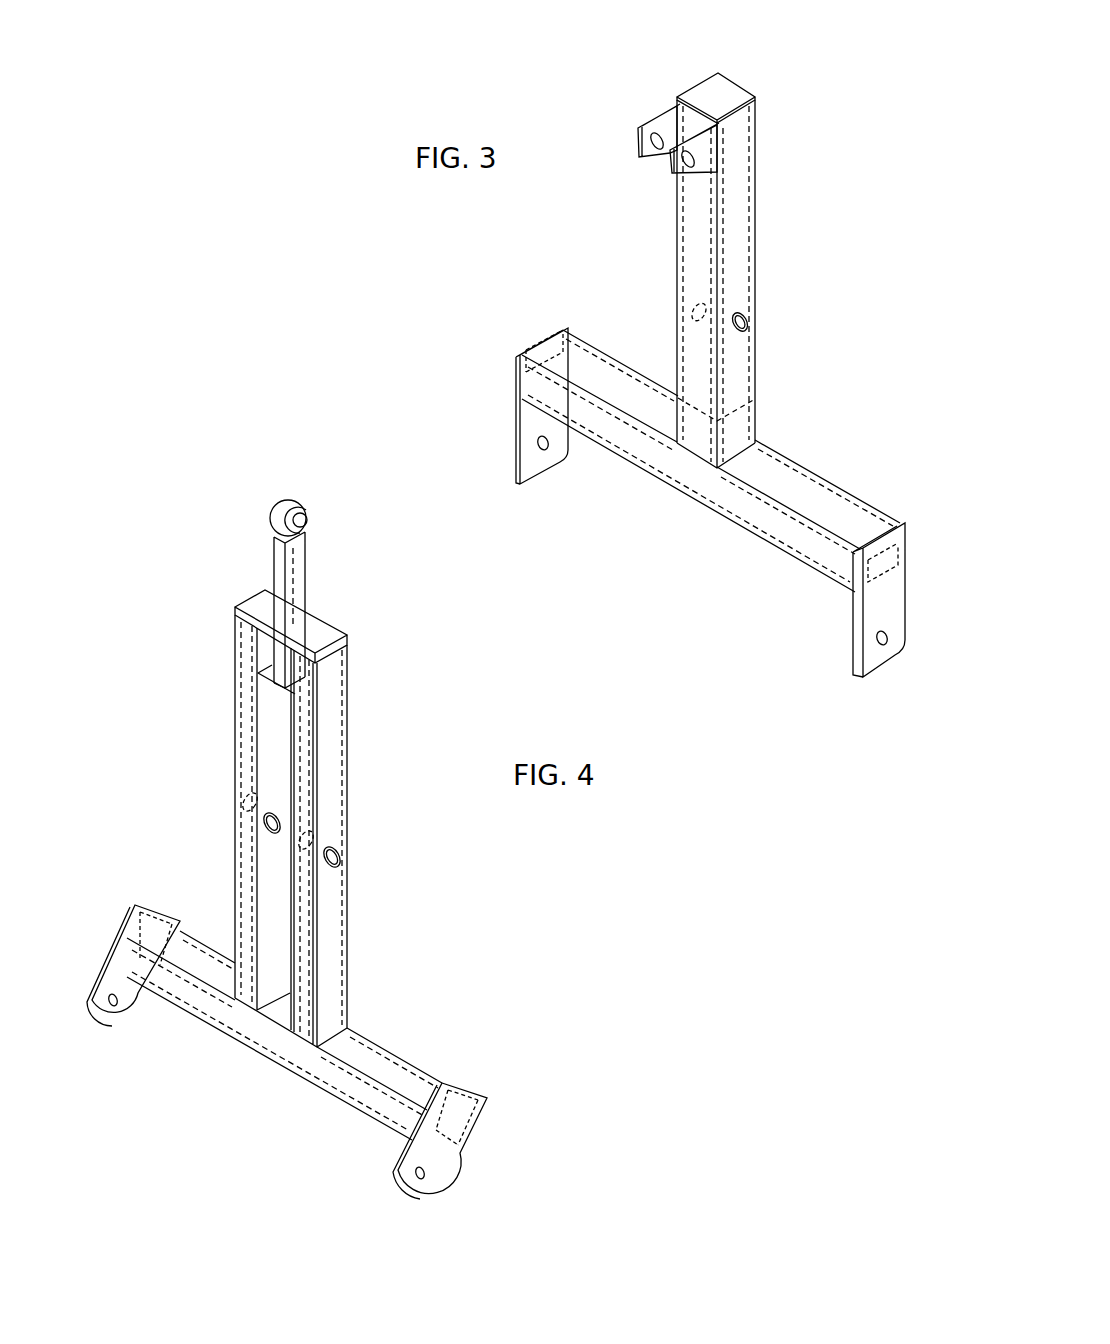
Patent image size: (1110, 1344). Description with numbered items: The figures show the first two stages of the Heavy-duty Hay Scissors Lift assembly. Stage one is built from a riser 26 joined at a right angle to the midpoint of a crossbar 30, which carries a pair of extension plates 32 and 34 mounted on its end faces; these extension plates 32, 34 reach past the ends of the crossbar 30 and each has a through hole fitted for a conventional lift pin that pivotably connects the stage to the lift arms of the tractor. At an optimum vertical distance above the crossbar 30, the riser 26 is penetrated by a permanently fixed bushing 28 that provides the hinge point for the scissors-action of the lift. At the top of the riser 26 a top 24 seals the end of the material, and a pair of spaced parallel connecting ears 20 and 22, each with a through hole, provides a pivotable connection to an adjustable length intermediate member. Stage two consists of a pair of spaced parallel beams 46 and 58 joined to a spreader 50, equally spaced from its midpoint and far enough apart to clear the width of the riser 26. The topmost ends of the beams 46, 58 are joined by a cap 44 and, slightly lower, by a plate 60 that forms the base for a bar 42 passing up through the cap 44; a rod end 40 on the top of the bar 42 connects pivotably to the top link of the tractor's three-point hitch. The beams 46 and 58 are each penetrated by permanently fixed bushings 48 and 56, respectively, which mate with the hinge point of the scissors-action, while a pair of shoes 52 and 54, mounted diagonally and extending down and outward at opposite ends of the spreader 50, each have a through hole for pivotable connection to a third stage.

In FIG. 3, the connecting ear 20 is at (670, 167).
In FIG. 3, the connecting ear 22 is at (638, 152).
In FIG. 3, the top 24 is at (722, 90).
In FIG. 3, the riser 26 is at (732, 147).
In FIG. 3, the bushing 28 is at (746, 318).
In FIG. 3, the crossbar 30 is at (770, 475).
In FIG. 3, the extension plate 32 is at (855, 630).
In FIG. 3, the extension plate 34 is at (522, 352).
In FIG. 4, the rod end 40 is at (295, 496).
In FIG. 4, the bar 42 is at (298, 570).
In FIG. 4, the cap 44 is at (317, 635).
In FIG. 4, the beam 46 is at (335, 718).
In FIG. 4, the bushing 48 is at (343, 853).
In FIG. 4, the spreader 50 is at (385, 1055).
In FIG. 4, the shoe 52 is at (470, 1092).
In FIG. 4, the shoe 54 is at (130, 943).
In FIG. 4, the bushing 56 is at (266, 836).
In FIG. 4, the beam 58 is at (245, 768).
In FIG. 4, the plate 60 is at (258, 677).